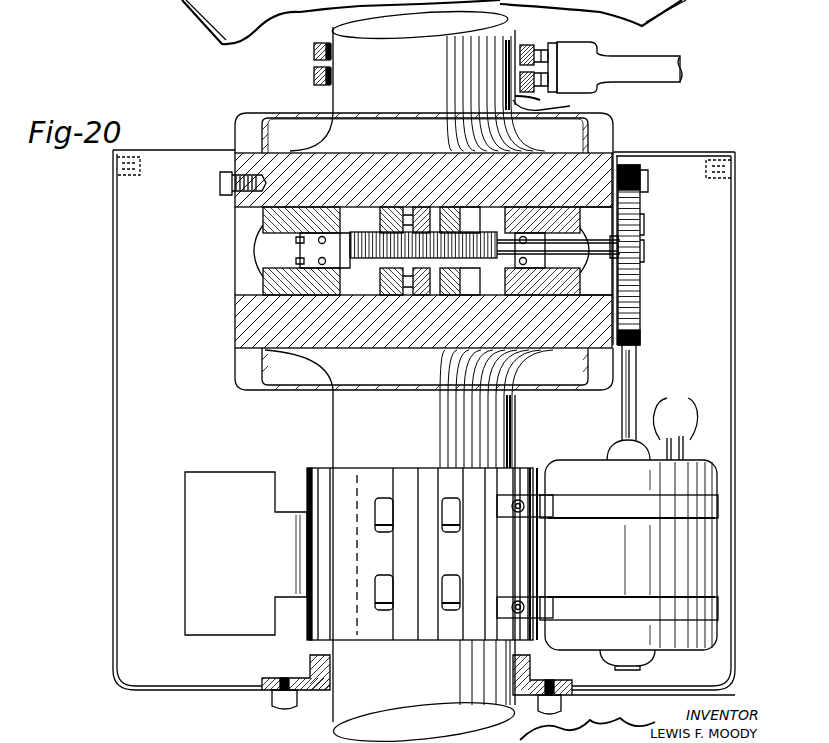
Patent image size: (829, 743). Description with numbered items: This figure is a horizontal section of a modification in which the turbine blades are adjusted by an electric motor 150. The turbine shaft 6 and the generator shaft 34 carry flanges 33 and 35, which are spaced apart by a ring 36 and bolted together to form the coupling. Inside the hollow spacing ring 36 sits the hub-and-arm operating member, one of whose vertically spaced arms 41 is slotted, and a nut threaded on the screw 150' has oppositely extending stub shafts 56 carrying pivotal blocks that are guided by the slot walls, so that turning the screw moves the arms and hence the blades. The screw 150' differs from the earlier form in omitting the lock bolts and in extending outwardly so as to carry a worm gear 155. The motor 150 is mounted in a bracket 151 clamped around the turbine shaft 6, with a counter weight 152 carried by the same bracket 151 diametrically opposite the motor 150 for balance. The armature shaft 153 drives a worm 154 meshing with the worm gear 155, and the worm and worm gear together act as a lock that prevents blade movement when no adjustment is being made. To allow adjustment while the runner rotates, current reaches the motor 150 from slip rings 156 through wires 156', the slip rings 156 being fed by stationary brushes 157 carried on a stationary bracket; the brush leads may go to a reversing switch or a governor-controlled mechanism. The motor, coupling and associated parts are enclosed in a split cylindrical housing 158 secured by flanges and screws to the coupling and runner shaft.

The turbine shaft 6 is at (340, 706).
The flange 33 is at (246, 322).
The generator shaft 34 is at (333, 38).
The flange 35 is at (245, 212).
The spacing ring 36 is at (236, 264).
The arm 41 is at (385, 300).
The stub shafts 56 is at (386, 300).
The electric motor 150 is at (658, 555).
The screw 150' is at (561, 251).
The bracket 151 is at (520, 468).
The counter weight 152 is at (203, 475).
The armature shaft 153 is at (630, 378).
The worm 154 is at (642, 288).
The worm gear 155 is at (640, 206).
The slip rings 156 is at (295, 64).
The wires 156' is at (605, 275).
The stationary brushes 157 is at (531, 55).
The cylindrical housing 158 is at (744, 314).